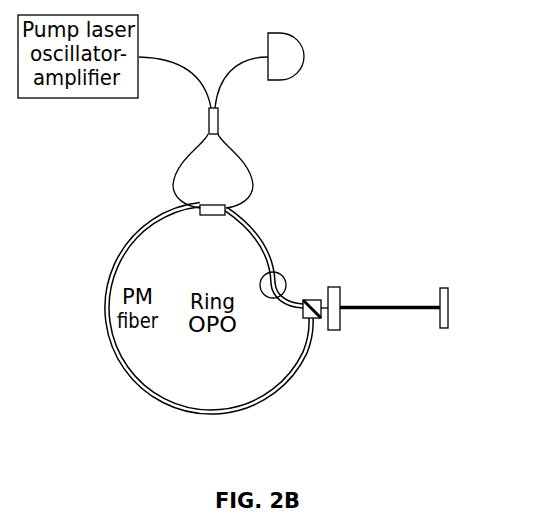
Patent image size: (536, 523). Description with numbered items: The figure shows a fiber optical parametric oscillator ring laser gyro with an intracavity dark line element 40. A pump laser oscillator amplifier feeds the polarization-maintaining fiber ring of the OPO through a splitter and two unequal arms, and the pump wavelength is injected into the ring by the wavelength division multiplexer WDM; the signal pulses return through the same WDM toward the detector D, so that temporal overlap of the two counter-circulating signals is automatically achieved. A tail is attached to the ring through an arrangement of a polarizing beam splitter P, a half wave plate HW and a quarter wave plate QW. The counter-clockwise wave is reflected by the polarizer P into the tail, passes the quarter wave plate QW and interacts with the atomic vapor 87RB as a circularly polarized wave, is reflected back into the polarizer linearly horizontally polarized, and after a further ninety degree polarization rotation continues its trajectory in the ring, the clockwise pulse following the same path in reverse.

The intracavity dark line element 40 is at (264, 233).
The detector D is at (286, 56).
The wavelength division multiplexer WDM is at (208, 224).
The half wave plate HW is at (287, 275).
The polarizing beam splitter P is at (313, 297).
The quarter wave plate QW is at (334, 296).
The atomic vapor 87RB is at (394, 303).